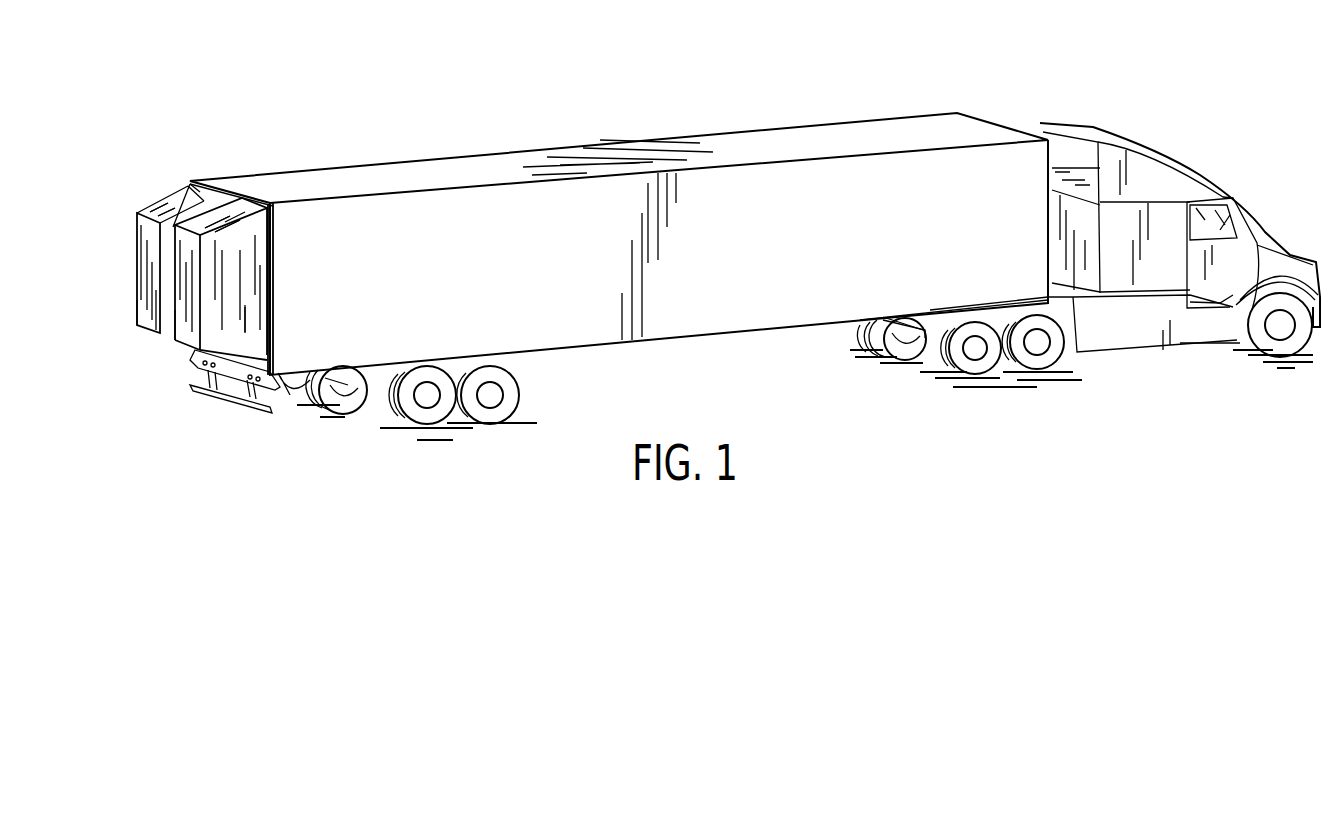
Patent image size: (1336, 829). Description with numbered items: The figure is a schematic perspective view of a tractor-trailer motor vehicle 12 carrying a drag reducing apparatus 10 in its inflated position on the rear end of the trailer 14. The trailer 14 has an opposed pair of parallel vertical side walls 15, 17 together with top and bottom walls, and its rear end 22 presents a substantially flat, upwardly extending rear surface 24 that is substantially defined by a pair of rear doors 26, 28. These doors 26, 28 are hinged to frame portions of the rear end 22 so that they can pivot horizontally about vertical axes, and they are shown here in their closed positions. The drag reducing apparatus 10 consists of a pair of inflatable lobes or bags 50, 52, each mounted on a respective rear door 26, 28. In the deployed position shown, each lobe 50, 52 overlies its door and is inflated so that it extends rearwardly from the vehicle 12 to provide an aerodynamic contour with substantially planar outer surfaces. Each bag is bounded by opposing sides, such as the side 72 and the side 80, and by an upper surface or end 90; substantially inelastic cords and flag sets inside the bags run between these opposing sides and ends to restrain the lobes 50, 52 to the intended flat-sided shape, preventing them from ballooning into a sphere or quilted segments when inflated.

The drag reducing apparatus 10 is at (208, 232).
The motor vehicle 12 is at (918, 67).
The trailer 14 is at (619, 261).
The side wall 15 is at (718, 308).
The side wall 17 is at (442, 158).
The rear end 22 is at (191, 407).
The rear surface 24 is at (240, 198).
The rear door 26 is at (243, 363).
The rear door 28 is at (228, 357).
The inflatable lobe 50 is at (246, 258).
The inflatable lobe 52 is at (138, 232).
The opposing side of the bag 72 is at (180, 310).
The opposing side of the lobe 80 is at (252, 318).
The upper surface or end 90 is at (200, 218).